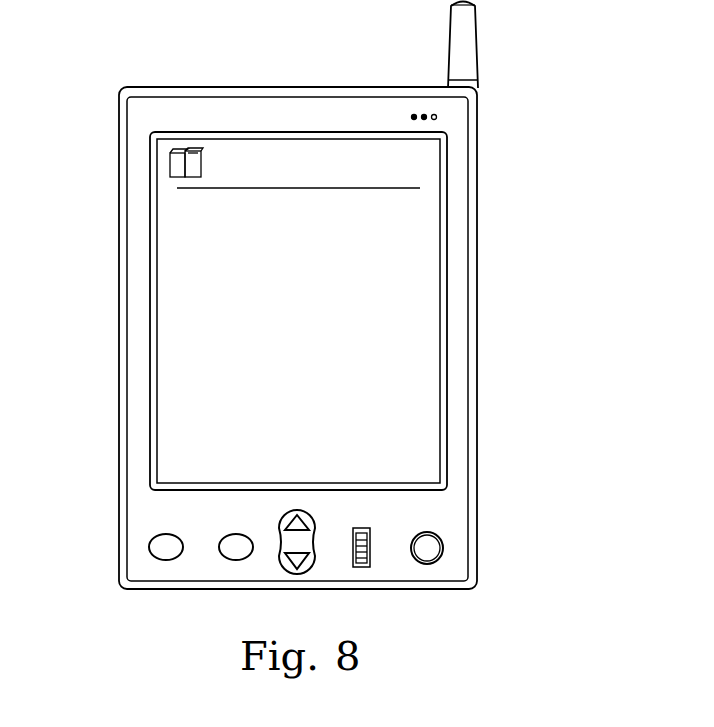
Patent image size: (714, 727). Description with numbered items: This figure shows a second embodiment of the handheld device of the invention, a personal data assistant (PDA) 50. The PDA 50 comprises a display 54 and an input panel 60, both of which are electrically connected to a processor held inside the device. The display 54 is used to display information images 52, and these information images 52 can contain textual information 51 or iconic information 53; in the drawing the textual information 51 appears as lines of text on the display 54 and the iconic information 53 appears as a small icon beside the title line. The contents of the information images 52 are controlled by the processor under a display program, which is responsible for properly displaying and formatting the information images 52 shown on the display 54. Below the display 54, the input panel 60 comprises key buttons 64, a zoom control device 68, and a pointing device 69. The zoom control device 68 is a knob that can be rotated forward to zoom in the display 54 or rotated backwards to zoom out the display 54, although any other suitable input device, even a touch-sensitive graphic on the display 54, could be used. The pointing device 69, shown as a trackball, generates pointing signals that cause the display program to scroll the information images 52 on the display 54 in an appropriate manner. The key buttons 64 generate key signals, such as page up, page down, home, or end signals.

The personal data assistant (PDA) 50 is at (517, 112).
The textual information 51 is at (172, 216).
The information images 52 is at (190, 425).
The iconic information 53 is at (170, 165).
The display 54 is at (428, 463).
The input panel 60 is at (477, 548).
The key buttons 64 is at (205, 562).
The zoom control device 68 is at (370, 560).
The pointing device 69 is at (428, 547).